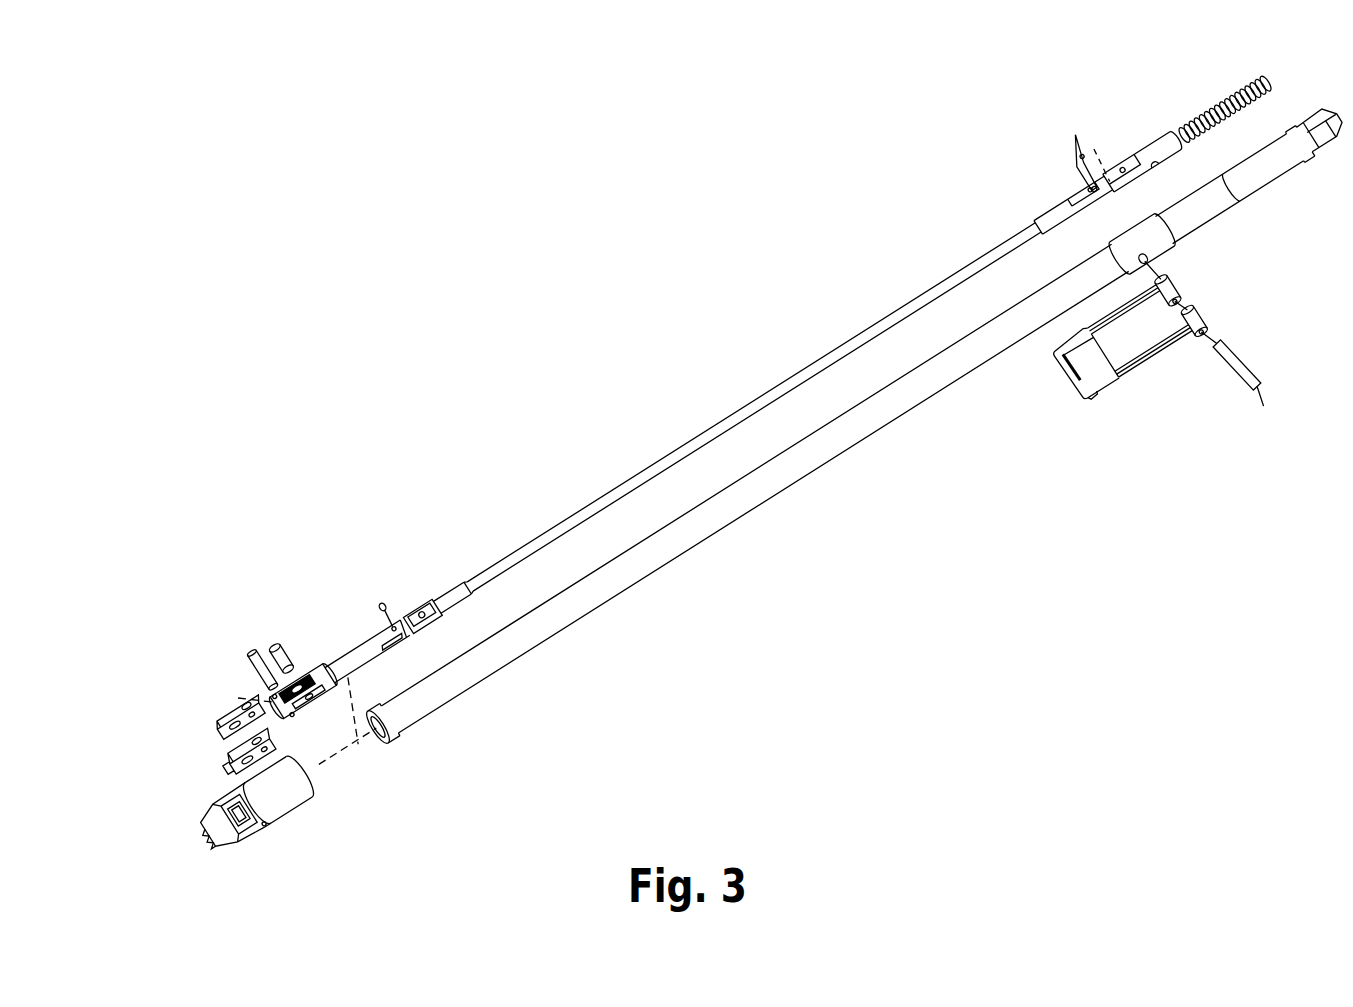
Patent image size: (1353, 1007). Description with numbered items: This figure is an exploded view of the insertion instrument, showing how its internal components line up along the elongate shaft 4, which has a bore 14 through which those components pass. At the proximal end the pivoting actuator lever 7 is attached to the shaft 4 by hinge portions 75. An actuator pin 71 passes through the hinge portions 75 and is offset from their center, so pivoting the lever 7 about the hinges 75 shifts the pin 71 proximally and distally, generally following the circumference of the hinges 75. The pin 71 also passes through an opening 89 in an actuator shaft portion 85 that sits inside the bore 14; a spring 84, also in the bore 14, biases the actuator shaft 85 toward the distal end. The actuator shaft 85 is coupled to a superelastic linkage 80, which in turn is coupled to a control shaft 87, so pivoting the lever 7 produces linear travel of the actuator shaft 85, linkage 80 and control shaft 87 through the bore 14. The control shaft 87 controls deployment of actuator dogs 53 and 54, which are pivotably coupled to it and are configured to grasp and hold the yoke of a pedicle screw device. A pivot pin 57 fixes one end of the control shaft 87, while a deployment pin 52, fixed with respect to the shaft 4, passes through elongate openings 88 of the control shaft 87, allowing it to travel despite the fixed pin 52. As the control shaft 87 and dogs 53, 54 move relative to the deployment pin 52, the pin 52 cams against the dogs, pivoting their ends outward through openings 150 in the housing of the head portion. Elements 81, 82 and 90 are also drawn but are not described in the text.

The elongate shaft 4 is at (752, 518).
The pivoting actuator lever 7 is at (1078, 392).
The bore 14 is at (383, 745).
The deployment pin 52 is at (252, 656).
The actuator dog 53 is at (232, 716).
The actuator dog 54 is at (234, 764).
The pivot pin 57 is at (284, 650).
The actuator pin 71 is at (1262, 403).
The hinge portions 75 is at (1172, 287).
The superelastic linkage 80 is at (725, 421).
The pin 81 is at (388, 606).
The locking pin 82 is at (1084, 160).
The spring 84 is at (1230, 96).
The actuator shaft portion 85 is at (1136, 165).
The control shaft 87 is at (348, 658).
The elongate openings 88 is at (275, 697).
The opening 89 is at (1158, 166).
The slot 90 is at (319, 715).
The openings 150 is at (232, 813).